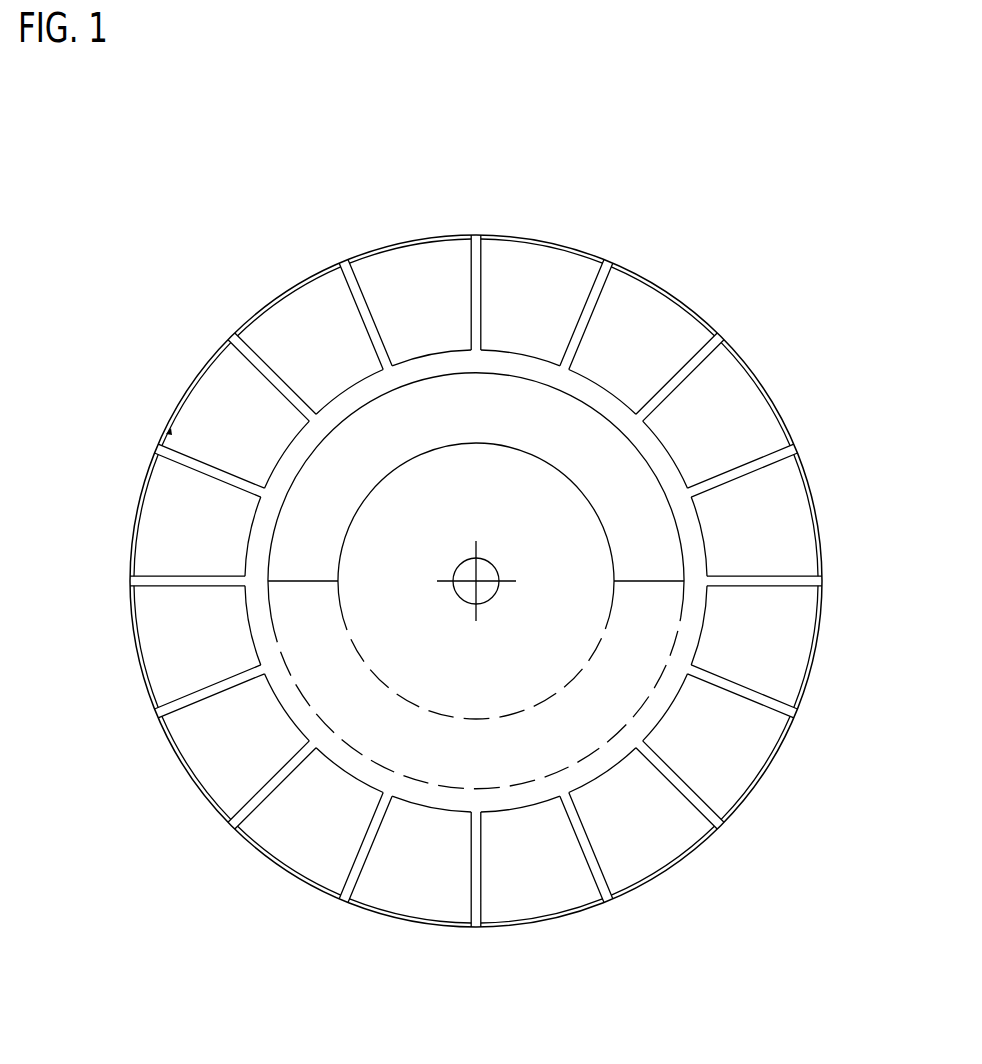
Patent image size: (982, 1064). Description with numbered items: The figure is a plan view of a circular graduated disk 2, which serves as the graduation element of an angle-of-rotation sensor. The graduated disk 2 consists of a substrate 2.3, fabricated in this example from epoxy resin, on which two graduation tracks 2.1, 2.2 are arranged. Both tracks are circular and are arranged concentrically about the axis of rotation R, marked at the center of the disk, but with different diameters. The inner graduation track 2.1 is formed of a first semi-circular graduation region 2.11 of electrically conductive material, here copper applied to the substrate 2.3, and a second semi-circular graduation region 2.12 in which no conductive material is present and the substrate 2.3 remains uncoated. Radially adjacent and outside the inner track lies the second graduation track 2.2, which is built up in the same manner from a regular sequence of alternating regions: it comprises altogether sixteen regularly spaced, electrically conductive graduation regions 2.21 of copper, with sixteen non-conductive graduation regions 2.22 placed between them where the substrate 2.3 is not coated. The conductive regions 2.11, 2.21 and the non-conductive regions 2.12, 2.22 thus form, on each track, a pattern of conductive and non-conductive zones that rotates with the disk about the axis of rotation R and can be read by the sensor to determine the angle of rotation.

The graduated disk 2 is at (479, 551).
The inner graduation track 2.1 is at (683, 537).
The first semi-circular graduation region 2.11 is at (568, 423).
The second semi-circular graduation region 2.12 is at (310, 678).
The second graduation track 2.2 is at (483, 551).
The electrically conductive graduation region 2.21 is at (415, 287).
The non-conductive graduation region 2.22 is at (343, 262).
The substrate 2.3 is at (800, 715).
The axis of rotation R is at (468, 582).